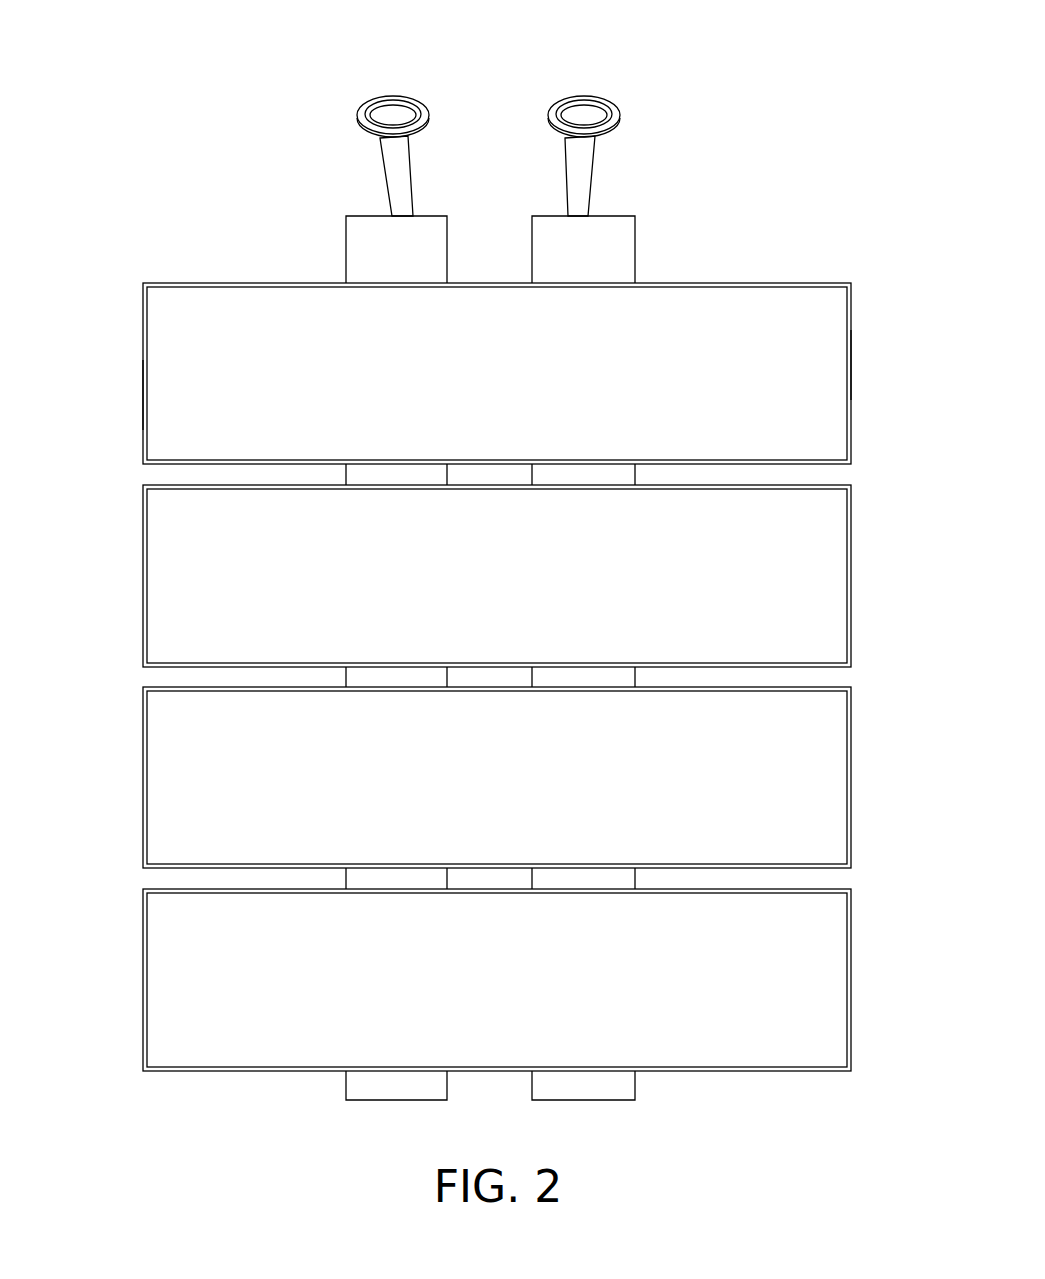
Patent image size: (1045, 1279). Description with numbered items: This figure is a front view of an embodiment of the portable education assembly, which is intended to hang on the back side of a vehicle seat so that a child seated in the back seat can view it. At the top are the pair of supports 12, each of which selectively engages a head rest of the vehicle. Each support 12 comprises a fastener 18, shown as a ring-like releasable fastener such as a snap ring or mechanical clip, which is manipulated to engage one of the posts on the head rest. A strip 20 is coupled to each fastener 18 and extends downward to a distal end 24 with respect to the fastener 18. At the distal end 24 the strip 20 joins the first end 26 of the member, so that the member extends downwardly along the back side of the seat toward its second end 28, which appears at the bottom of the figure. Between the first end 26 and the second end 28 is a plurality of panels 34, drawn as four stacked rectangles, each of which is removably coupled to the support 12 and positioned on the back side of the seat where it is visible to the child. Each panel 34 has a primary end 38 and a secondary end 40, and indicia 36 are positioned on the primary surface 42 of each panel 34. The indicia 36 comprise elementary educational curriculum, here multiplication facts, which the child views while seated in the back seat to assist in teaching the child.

The support 12 is at (484, 116).
The fastener 18 is at (366, 108).
The strip 20 is at (386, 164).
The distal end 24 is at (400, 217).
The first end 26 is at (540, 212).
The second end 28 is at (347, 1100).
The panel 34 is at (851, 283).
The indicia 36 is at (476, 637).
The primary end 38 is at (845, 362).
The secondary end 40 is at (143, 400).
The primary surface 42 is at (797, 316).